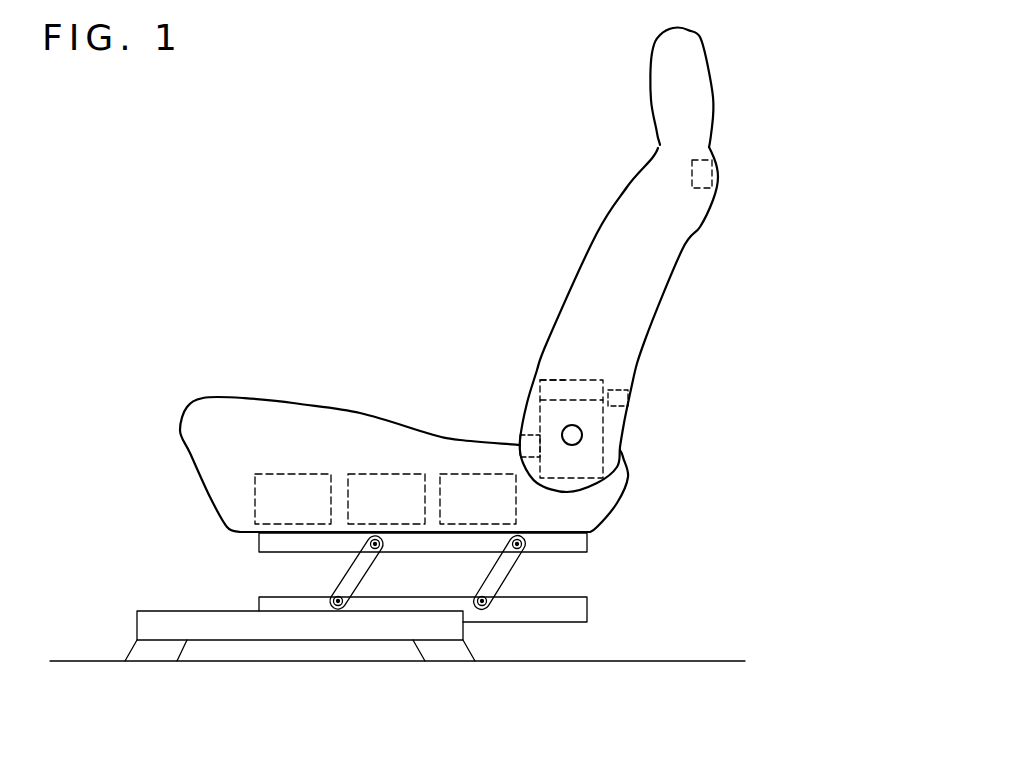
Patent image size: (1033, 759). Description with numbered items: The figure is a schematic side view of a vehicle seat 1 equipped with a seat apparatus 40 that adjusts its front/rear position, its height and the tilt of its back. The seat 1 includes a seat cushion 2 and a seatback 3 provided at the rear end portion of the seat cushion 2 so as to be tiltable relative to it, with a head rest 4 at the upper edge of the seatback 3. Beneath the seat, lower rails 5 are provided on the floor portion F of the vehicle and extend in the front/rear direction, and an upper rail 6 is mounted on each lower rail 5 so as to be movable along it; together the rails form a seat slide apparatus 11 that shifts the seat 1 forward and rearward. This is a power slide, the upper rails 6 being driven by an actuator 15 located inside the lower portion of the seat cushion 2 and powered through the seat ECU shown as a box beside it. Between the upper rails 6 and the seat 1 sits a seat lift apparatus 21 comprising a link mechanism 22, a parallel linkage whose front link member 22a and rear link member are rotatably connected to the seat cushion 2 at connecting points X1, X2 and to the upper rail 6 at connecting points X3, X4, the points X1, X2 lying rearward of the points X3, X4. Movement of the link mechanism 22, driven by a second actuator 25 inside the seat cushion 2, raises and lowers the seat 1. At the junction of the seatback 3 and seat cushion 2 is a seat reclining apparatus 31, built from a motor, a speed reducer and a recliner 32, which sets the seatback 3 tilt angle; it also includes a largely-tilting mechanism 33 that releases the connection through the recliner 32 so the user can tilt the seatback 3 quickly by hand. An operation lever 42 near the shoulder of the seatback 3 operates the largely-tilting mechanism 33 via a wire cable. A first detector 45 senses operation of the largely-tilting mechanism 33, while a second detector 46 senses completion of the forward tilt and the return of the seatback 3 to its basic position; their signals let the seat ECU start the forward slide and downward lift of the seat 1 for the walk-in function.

The seat 1 is at (607, 213).
The seat cushion 2 is at (217, 396).
The seatback 3 is at (660, 269).
The head rest 4 is at (688, 38).
The lower rail 5 is at (158, 618).
The upper rail 6 is at (575, 609).
The seat slide apparatus 11 is at (359, 617).
The actuator 15 is at (283, 472).
The seat lift apparatus 21 is at (628, 569).
The link mechanism 22 is at (378, 472).
The link member 22a is at (338, 572).
The actuator 25 is at (452, 471).
The seat reclining apparatus 31 is at (584, 414).
The recliner 32 is at (603, 437).
The largely-tilting mechanism 33 is at (565, 378).
The seat apparatus 40 is at (212, 185).
The operation lever 42 is at (715, 180).
The first detector 45 is at (628, 396).
The second detector 46 is at (525, 438).
The floor portion F is at (736, 661).
The connecting point X1 is at (382, 548).
The connecting point X2 is at (497, 548).
The connecting point X3 is at (345, 612).
The connecting point X4 is at (489, 612).